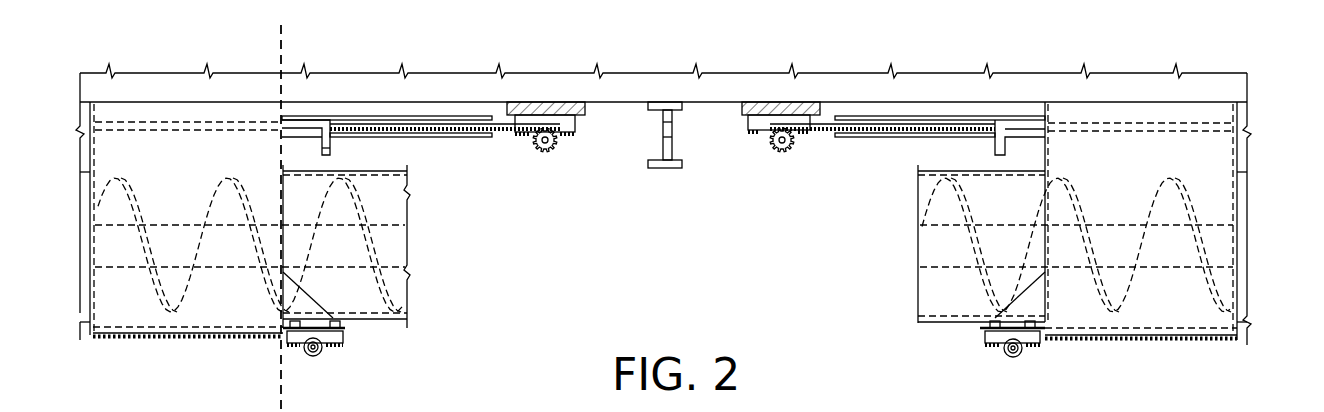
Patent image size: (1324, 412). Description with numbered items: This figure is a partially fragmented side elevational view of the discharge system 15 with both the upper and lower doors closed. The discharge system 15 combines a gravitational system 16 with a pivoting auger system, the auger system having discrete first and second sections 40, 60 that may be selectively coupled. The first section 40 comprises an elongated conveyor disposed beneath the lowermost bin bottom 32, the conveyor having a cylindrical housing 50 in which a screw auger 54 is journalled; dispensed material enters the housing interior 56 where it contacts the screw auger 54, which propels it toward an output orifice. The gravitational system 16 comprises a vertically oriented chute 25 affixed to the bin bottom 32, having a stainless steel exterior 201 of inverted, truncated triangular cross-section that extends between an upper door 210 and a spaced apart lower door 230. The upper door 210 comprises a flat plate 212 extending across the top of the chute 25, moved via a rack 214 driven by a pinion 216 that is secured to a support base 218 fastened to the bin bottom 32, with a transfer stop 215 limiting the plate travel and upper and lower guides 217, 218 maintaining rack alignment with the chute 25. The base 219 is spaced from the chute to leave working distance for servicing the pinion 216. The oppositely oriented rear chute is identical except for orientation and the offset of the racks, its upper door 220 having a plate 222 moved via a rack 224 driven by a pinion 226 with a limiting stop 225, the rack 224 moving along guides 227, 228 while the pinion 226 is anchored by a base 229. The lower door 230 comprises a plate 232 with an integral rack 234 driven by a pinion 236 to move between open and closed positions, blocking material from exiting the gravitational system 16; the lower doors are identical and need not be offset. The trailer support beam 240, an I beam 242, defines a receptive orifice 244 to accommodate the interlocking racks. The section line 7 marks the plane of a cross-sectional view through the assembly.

The section line 7- 7 is at (312, 57).
The discharge system 15 is at (573, 278).
The gravitational system 16 is at (635, 369).
The chute 25 is at (76, 236).
The bin bottom 32 is at (433, 101).
The first section 40 is at (86, 264).
The cylindrical housing 50 is at (378, 237).
The screw auger 54 is at (398, 240).
The housing interior 56 is at (408, 185).
The second section 60 is at (1219, 220).
The exterior 201 is at (187, 123).
The upper door 210 is at (399, 101).
The plate 212 is at (312, 128).
The rack 214 is at (498, 122).
The transfer stop 215 is at (322, 148).
The pinion 216 is at (543, 157).
The upper guide 217 is at (408, 116).
The support base 218 is at (473, 138).
The base 219 is at (535, 102).
The upper door 220 is at (953, 117).
The plate 222 is at (985, 117).
The rack 224 is at (817, 132).
The limiting stop 225 is at (997, 145).
The pinion 226 is at (788, 157).
The guide 227 is at (890, 117).
The guide 228 is at (850, 138).
The base 229 is at (815, 114).
The lower door 230 is at (673, 366).
The plate 232 is at (160, 334).
The integral rack 234 is at (195, 334).
The pinion 236 is at (315, 357).
The trailer support beam 240 is at (703, 127).
The I beam 242 is at (668, 173).
The receptive orifice 244 is at (673, 133).